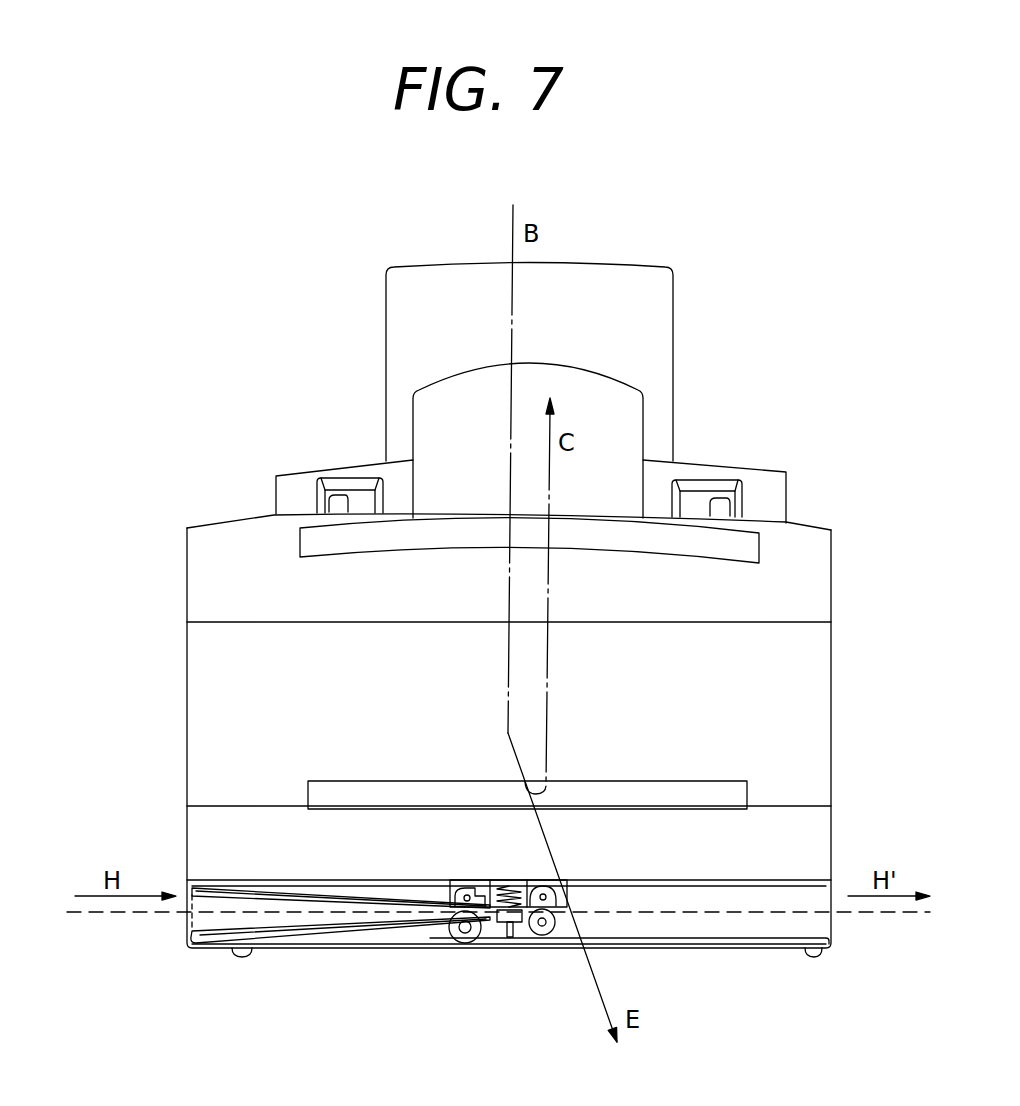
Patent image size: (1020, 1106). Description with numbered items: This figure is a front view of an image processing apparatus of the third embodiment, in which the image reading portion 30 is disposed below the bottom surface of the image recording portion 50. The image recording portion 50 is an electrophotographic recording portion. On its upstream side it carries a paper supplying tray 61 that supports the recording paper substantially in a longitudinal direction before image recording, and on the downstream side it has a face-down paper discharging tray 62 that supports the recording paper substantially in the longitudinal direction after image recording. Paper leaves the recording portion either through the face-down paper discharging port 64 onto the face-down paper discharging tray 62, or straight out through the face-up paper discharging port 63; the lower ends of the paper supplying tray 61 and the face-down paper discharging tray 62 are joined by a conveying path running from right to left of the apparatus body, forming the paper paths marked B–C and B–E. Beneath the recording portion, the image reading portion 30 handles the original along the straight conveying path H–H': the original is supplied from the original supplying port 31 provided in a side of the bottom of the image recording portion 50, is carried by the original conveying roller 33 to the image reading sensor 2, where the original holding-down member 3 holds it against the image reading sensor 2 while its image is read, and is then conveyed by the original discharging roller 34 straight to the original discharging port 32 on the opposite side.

The image recording portion 50 is at (232, 505).
The paper supplying tray 61 is at (663, 308).
The face-down paper discharging tray 62 is at (645, 413).
The face-up paper discharging port 63 is at (714, 793).
The face-down paper discharging port 64 is at (734, 538).
The image reading portion 30 is at (476, 1030).
The original supplying port 31 is at (195, 925).
The original discharging port 32 is at (826, 925).
The original conveying roller 33 is at (455, 943).
The original discharging roller 34 is at (543, 950).
The image reading sensor 2 is at (485, 945).
The original holding-down member 3 is at (513, 950).